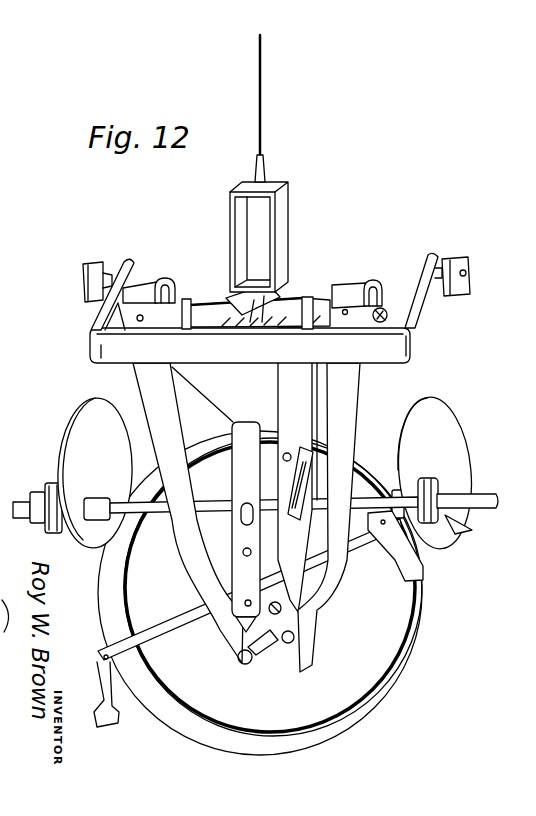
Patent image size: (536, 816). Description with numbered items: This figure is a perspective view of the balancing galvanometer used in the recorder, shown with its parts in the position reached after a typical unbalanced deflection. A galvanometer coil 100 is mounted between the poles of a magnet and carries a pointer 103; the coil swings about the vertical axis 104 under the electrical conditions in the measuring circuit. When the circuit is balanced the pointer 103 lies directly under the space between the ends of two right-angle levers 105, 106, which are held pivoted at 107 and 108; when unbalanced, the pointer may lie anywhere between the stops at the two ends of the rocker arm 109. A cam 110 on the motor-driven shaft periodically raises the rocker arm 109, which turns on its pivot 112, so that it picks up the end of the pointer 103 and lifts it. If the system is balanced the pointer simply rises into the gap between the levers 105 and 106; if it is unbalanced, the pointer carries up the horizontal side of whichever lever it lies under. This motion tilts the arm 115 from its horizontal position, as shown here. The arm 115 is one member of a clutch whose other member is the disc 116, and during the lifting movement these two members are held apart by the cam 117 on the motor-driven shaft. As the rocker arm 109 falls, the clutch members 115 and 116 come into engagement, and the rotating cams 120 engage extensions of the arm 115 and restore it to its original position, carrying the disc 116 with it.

The galvanometer coil 100 is at (278, 213).
The galvanometer pointer 103 is at (226, 298).
The vertical axis 104 is at (261, 110).
The right-angle lever 105 is at (288, 303).
The right-angle lever 106 is at (197, 296).
The pivot 107 is at (346, 310).
The pivot 108 is at (137, 318).
The rocker arm 109 is at (417, 331).
The cam 110 is at (296, 520).
The pivot 112 is at (133, 282).
The arm 115 is at (395, 574).
The disc 116 is at (388, 693).
The cam 117 is at (222, 528).
The cams 120 is at (58, 452).